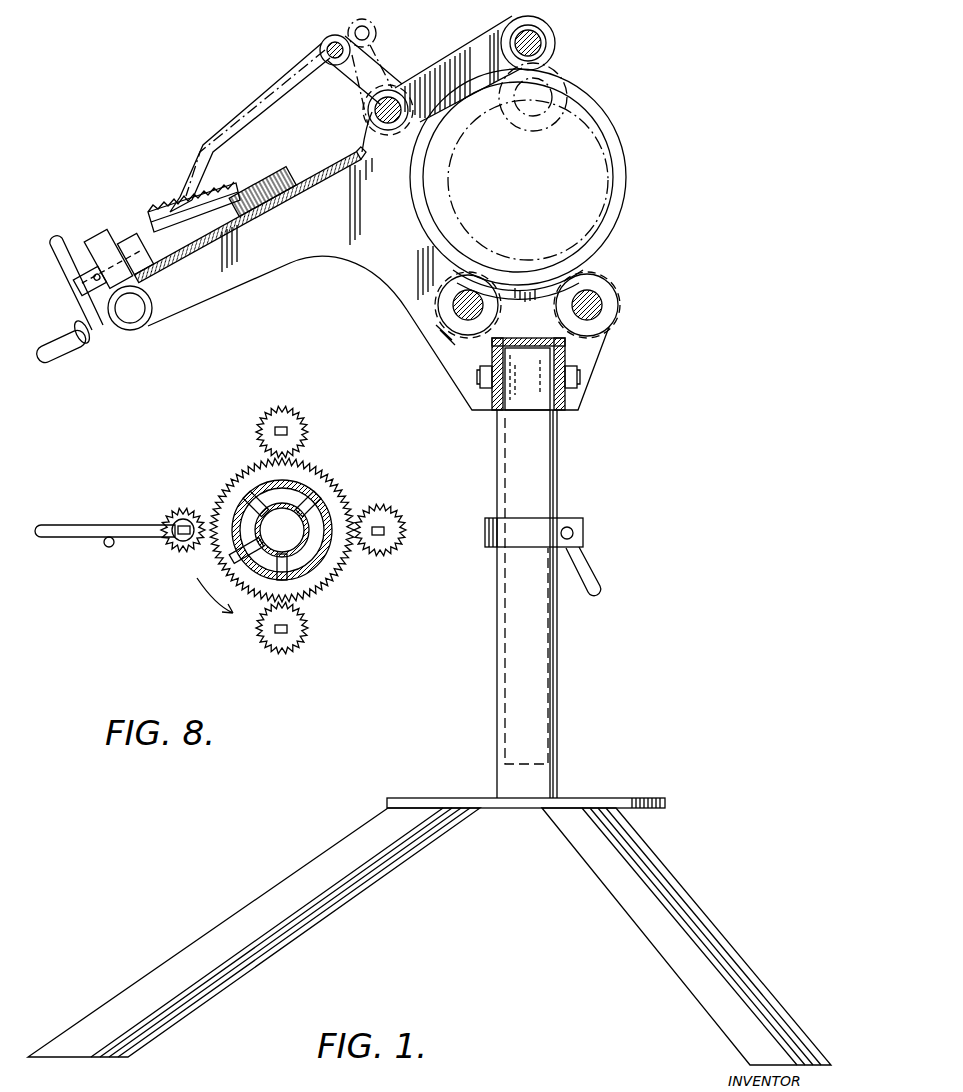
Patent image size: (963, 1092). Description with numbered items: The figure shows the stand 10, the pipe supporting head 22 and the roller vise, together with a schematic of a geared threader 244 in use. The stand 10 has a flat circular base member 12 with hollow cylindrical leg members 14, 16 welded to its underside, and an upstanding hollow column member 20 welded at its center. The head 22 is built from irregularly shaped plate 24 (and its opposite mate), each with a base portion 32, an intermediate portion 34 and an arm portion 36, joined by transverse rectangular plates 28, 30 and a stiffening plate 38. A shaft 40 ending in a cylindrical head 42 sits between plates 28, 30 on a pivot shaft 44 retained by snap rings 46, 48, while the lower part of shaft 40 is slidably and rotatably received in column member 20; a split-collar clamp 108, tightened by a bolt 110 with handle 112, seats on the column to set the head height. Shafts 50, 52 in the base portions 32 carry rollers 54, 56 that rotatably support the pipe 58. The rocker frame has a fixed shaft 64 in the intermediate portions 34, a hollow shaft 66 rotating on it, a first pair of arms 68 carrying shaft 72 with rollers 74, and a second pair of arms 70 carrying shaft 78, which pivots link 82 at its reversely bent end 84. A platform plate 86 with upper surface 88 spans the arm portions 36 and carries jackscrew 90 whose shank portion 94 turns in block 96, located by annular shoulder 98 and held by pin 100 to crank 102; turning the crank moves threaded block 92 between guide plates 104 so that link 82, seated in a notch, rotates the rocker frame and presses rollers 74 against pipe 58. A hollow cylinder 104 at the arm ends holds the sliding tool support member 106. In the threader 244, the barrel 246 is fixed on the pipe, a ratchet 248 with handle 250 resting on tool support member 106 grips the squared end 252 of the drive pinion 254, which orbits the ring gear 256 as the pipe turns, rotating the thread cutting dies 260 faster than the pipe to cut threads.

In FIG. 1, the stand 10 is at (666, 727).
In FIG. 1, the base member 12 is at (446, 797).
In FIG. 1, the leg member 14 is at (330, 912).
In FIG. 1, the leg member 16 is at (690, 908).
In FIG. 1, the column member 20 is at (506, 665).
In FIG. 1, the pipe supporting head 22 is at (304, 282).
In FIG. 1, the plate 24 is at (455, 355).
In FIG. 1, the plate 28 is at (558, 412).
In FIG. 1, the plate 30 is at (500, 414).
In FIG. 1, the base portion 32 is at (606, 349).
In FIG. 1, the intermediate portion 34 is at (368, 258).
In FIG. 1, the arm portion 36 is at (203, 290).
In FIG. 1, the plate 38 is at (540, 337).
In FIG. 1, the shaft 40 is at (555, 480).
In FIG. 1, the head 42 is at (525, 420).
In FIG. 1, the pivot shaft 44 is at (585, 372).
In FIG. 1, the snap ring 46 is at (583, 400).
In FIG. 1, the snap ring 48 is at (490, 390).
In FIG. 1, the shaft 50 is at (605, 310).
In FIG. 1, the shaft 52 is at (455, 308).
In FIG. 1, the roller 54 is at (612, 290).
In FIG. 1, the roller 56 is at (480, 282).
In FIG. 1, the pipe 58 is at (626, 165).
In FIG. 1, the shaft 64 is at (374, 115).
In FIG. 1, the hollow shaft 66 is at (358, 98).
In FIG. 1, the arm 68 is at (447, 55).
In FIG. 1, the arm 70 is at (372, 70).
In FIG. 1, the shaft 72 is at (546, 46).
In FIG. 1, the roller 74 is at (548, 30).
In FIG. 1, the shaft 78 is at (332, 36).
In FIG. 1, the link 82 is at (258, 108).
In FIG. 1, the reversely bent end 84 is at (322, 46).
In FIG. 1, the plate 86 is at (288, 205).
In FIG. 1, the upper surface 88 is at (312, 175).
In FIG. 1, the jackscrew 90 is at (168, 230).
In FIG. 1, the block 92 is at (172, 200).
In FIG. 1, the shank portion 94 is at (95, 275).
In FIG. 1, the block 96 is at (118, 253).
In FIG. 1, the annular shoulder 98 is at (138, 240).
In FIG. 1, the pin 100 is at (68, 255).
In FIG. 1, the crank 102 is at (98, 345).
In FIG. 1, the guide plate / hollow cylinder 104 is at (297, 170).
In FIG. 1, the tool support member 106 is at (148, 318).
In FIG. 8, the tool support member 106 is at (108, 547).
In FIG. 1, the clamp 108 is at (520, 535).
In FIG. 1, the bolt 110 is at (574, 533).
In FIG. 1, the handle 112 is at (600, 580).
In FIG. 8, the geared threader 244 is at (184, 474).
In FIG. 8, the barrel 246 is at (315, 580).
In FIG. 8, the ratchet 248 is at (175, 548).
In FIG. 8, the handle 250 is at (78, 525).
In FIG. 8, the squared end 252 is at (302, 432).
In FIG. 8, the drive pinion 254 is at (300, 645).
In FIG. 8, the ring gear 256 is at (320, 470).
In FIG. 8, the thread cutting dies 260 is at (245, 488).